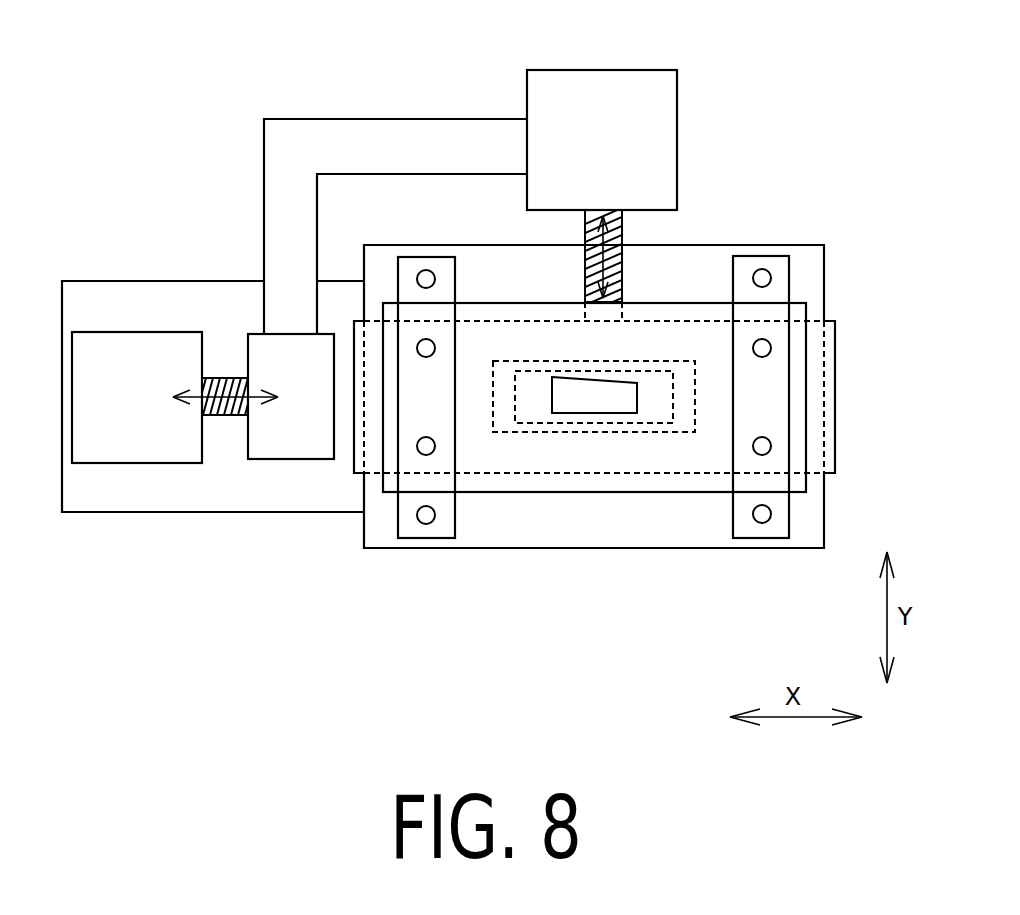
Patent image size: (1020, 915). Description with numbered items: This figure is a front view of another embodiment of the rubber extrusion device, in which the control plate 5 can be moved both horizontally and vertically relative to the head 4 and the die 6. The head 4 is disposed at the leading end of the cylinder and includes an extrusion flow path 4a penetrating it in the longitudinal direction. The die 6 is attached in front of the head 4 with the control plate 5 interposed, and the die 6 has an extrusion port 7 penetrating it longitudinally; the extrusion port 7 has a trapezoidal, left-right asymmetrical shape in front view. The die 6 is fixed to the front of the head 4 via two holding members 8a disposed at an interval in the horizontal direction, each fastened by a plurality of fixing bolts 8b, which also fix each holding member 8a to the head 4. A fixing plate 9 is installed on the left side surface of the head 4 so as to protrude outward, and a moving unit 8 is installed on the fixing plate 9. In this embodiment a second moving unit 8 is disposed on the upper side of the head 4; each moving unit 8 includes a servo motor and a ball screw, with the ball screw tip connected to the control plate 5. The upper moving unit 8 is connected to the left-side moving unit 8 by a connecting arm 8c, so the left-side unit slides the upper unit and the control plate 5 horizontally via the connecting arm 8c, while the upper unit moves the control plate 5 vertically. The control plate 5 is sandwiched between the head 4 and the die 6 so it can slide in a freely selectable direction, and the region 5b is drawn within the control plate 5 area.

The head 4 is at (729, 245).
The extrusion flow path 4a is at (494, 393).
The control plate 5 is at (836, 370).
The opening of moving table 5b is at (678, 396).
The die 6 is at (680, 302).
The extrusion port 7 is at (566, 412).
The moving unit 8 is at (488, 110).
The holding member 8a is at (445, 360).
The fixing bolt 8b is at (427, 270).
The connecting arm 8c is at (372, 133).
The fixing plate 9 is at (147, 290).